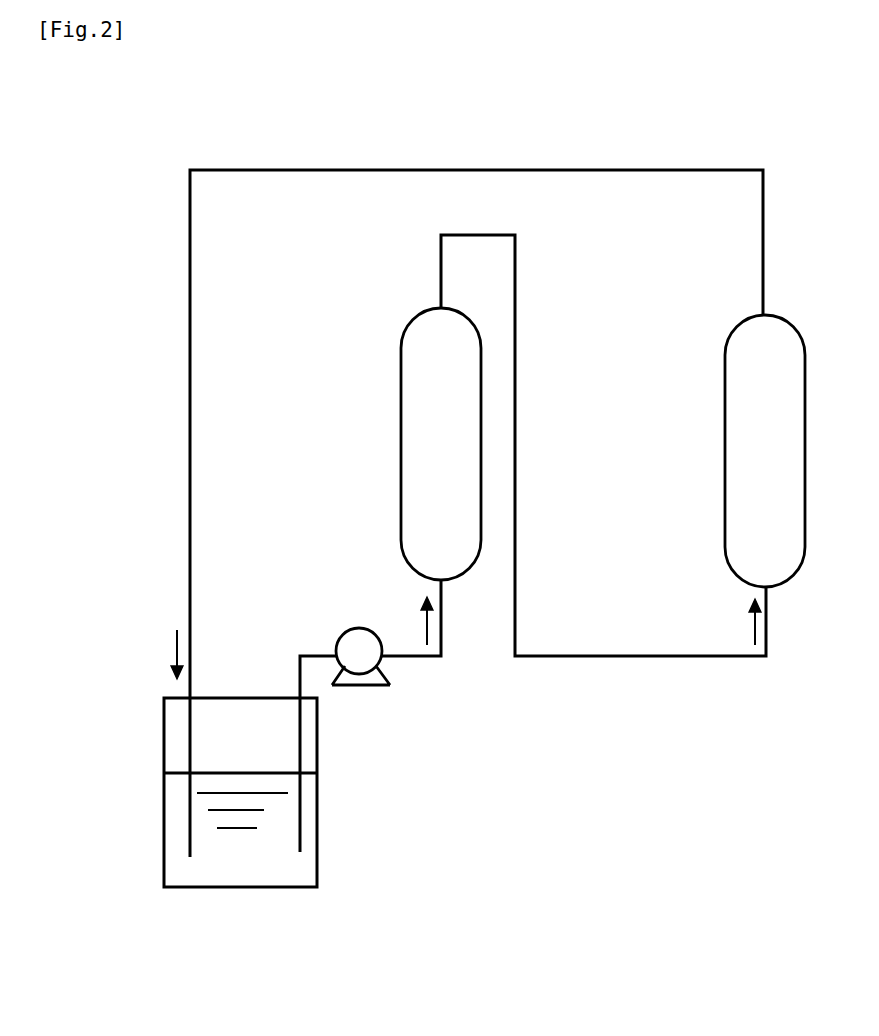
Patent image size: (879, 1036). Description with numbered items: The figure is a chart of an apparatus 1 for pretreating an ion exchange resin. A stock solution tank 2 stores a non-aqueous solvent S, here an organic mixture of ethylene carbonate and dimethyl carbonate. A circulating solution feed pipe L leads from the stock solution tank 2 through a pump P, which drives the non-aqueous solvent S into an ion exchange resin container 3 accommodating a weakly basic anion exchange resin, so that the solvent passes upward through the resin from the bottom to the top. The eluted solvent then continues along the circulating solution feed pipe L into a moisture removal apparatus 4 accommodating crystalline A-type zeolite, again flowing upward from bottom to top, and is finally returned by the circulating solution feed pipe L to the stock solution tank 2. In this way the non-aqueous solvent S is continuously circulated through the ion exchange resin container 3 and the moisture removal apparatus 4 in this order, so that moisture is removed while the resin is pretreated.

The apparatus for pretreating an ion exchange resin 1 is at (752, 121).
The stock solution tank 2 is at (165, 812).
The ion exchange resin container 3 is at (441, 444).
The moisture removal apparatus 4 is at (765, 451).
The circulating solution feed pipe L is at (468, 491).
The pump P is at (345, 630).
The non-aqueous solvent S is at (247, 872).